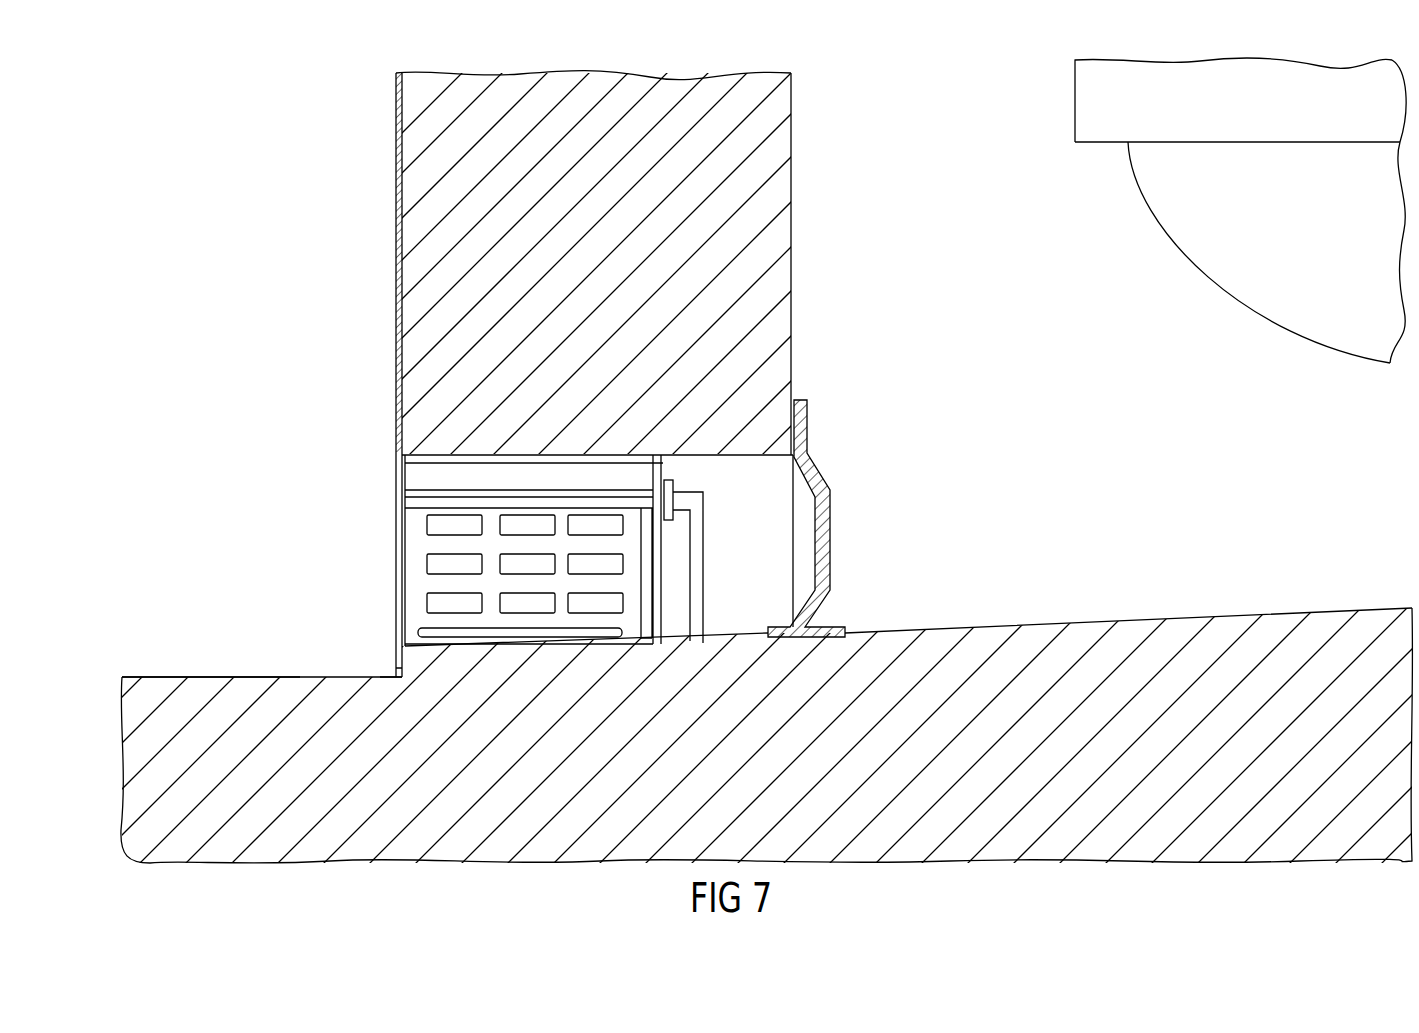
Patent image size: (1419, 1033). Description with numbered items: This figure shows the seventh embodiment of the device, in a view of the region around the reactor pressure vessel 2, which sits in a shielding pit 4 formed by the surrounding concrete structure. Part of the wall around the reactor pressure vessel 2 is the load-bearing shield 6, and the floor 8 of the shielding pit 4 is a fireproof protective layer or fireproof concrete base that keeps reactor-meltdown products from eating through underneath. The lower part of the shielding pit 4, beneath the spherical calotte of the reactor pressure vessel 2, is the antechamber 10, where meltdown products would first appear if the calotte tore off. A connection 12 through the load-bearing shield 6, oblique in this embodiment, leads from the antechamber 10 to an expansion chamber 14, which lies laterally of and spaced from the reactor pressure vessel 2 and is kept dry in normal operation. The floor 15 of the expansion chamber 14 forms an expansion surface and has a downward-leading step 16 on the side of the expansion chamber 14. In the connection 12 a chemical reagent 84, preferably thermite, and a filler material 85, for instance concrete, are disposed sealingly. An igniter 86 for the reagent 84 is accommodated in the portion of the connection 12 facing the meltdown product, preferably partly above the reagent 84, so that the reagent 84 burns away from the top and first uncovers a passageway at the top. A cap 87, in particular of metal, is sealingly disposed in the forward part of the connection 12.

The reactor pressure vessel 2 is at (1160, 224).
The shielding pit 4 is at (968, 181).
The load-bearing shield 6 is at (737, 103).
The floor 8 is at (1155, 645).
The antechamber 10 is at (1053, 538).
The connection 12 is at (440, 452).
The expansion chamber 14 is at (268, 583).
The floor 15 is at (174, 676).
The step 16 is at (397, 668).
The chemical reagent 84 is at (640, 594).
The filler material 85 is at (433, 477).
The igniter 86 is at (699, 577).
The cap 87 is at (826, 549).